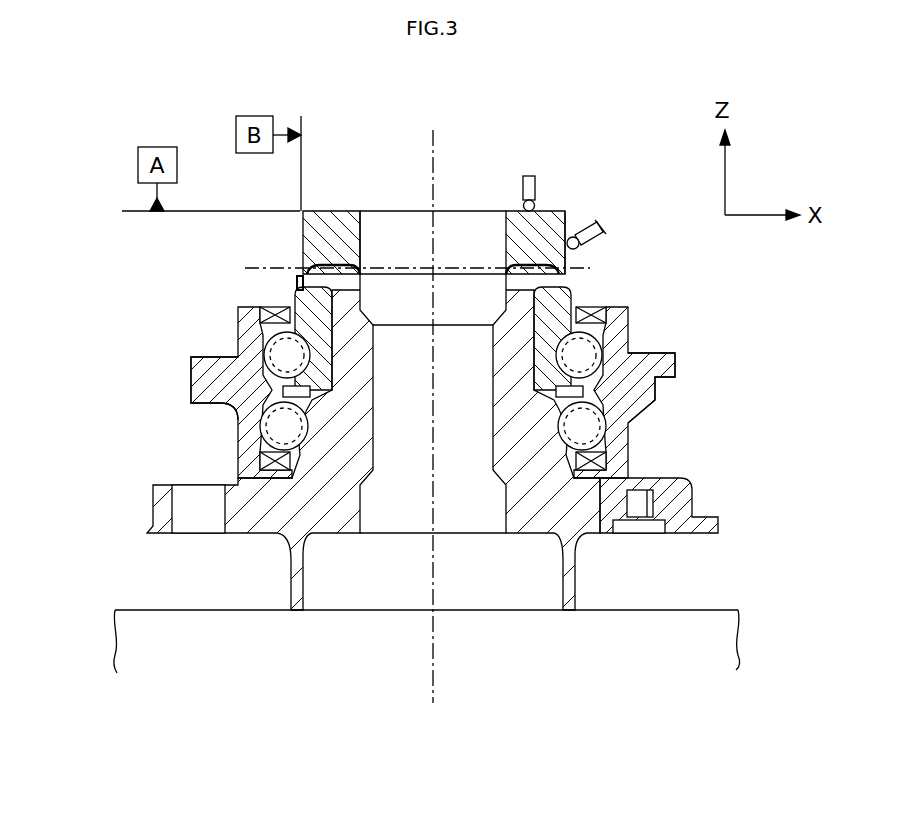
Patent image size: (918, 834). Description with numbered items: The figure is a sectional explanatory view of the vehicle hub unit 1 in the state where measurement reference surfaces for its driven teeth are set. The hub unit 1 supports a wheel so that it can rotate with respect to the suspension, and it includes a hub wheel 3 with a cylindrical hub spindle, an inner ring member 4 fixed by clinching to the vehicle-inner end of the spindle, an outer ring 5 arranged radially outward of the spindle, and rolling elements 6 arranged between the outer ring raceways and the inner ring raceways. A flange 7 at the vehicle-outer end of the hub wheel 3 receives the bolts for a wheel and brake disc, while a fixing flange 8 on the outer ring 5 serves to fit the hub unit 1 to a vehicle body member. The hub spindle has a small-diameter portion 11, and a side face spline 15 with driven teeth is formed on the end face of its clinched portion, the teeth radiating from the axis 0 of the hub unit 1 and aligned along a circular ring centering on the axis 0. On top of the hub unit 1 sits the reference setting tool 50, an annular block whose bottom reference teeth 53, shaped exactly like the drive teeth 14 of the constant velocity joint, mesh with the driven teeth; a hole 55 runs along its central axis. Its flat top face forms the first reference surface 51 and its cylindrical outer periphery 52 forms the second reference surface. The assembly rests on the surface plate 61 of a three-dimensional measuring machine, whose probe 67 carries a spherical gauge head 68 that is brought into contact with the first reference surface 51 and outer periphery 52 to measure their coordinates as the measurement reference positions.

The vehicle hub unit 1 is at (130, 540).
The hub wheel 3 is at (673, 480).
The inner ring member 4 is at (262, 321).
The outer ring 5 is at (391, 392).
The rolling elements 6 is at (603, 357).
The flange 7 is at (150, 489).
The fixing flange 8 is at (191, 378).
The small-diameter portion 11 is at (402, 442).
The drive teeth 14 is at (303, 262).
The side face spline 15 is at (574, 276).
The reference setting tool 50 is at (445, 209).
The first reference surface 51 is at (505, 213).
The outer periphery 52 is at (567, 217).
The reference teeth 53 is at (298, 282).
The hole 55 is at (363, 237).
The surface plate 61 is at (220, 610).
The probe 67 is at (538, 180).
The gauge head 68 is at (537, 200).
The axis 0 is at (430, 663).